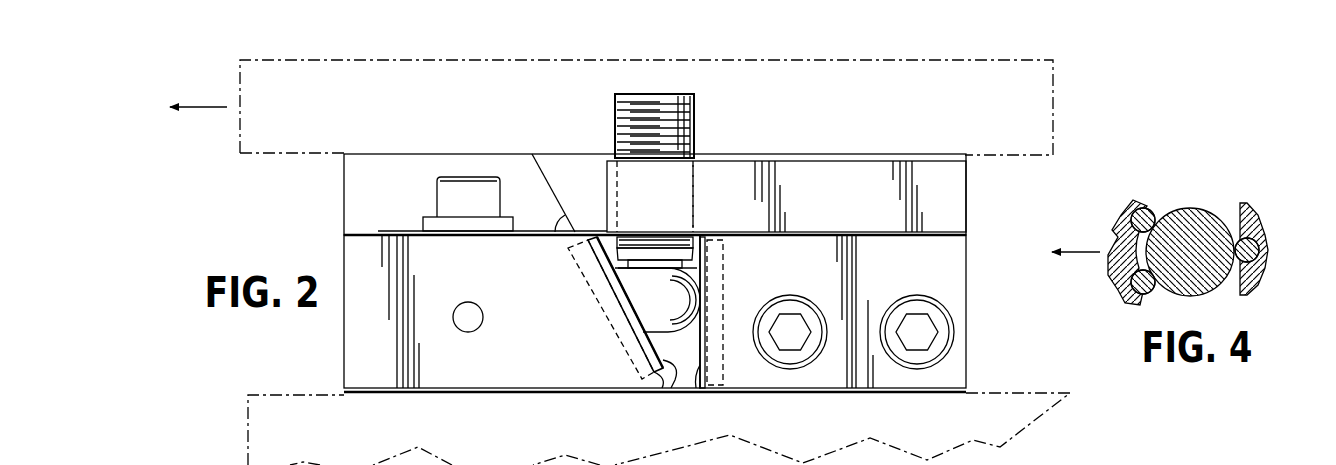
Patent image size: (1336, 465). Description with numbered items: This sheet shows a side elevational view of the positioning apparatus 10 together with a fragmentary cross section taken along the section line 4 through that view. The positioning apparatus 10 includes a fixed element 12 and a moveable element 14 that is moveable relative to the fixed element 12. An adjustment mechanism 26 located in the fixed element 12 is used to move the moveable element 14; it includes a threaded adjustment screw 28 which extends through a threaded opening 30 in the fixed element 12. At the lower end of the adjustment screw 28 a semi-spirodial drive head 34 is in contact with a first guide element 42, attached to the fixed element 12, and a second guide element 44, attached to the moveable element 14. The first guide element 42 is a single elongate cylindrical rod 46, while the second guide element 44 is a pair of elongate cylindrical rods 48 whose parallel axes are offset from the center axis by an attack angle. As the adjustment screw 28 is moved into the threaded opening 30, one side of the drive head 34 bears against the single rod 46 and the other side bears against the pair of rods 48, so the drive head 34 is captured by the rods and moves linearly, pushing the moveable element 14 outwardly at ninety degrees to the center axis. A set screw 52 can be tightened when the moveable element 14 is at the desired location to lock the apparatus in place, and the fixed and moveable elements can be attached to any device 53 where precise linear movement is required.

In FIG. 2, the positioning apparatus 10 is at (322, 200).
In FIG. 2, the fixed element 12 is at (955, 267).
In FIG. 4, the fixed element 12 is at (1262, 212).
In FIG. 2, the moveable element 14 is at (355, 350).
In FIG. 4, the moveable element 14 is at (1118, 212).
In FIG. 2, the adjustment mechanism 26 is at (704, 120).
In FIG. 2, the adjustment screw 28 is at (637, 93).
In FIG. 4, the adjustment screw 28 is at (1203, 208).
In FIG. 2, the threaded opening 30 is at (695, 200).
In FIG. 2, the drive head 34 is at (643, 303).
In FIG. 2, the first guide element 42 is at (735, 375).
In FIG. 2, the second guide element 44 is at (608, 340).
In FIG. 4, the second guide element 44 is at (1145, 207).
In FIG. 2, the single elongate cylindrical rod 46 is at (697, 393).
In FIG. 4, the single elongate cylindrical rod 46 is at (1268, 246).
In FIG. 2, the pair of elongate cylindrical rods 48 is at (662, 393).
In FIG. 2, the set screw 52 is at (432, 202).
In FIG. 2, the device 53 is at (1055, 107).
In FIG. 2, the section line 4- 4 is at (558, 333).